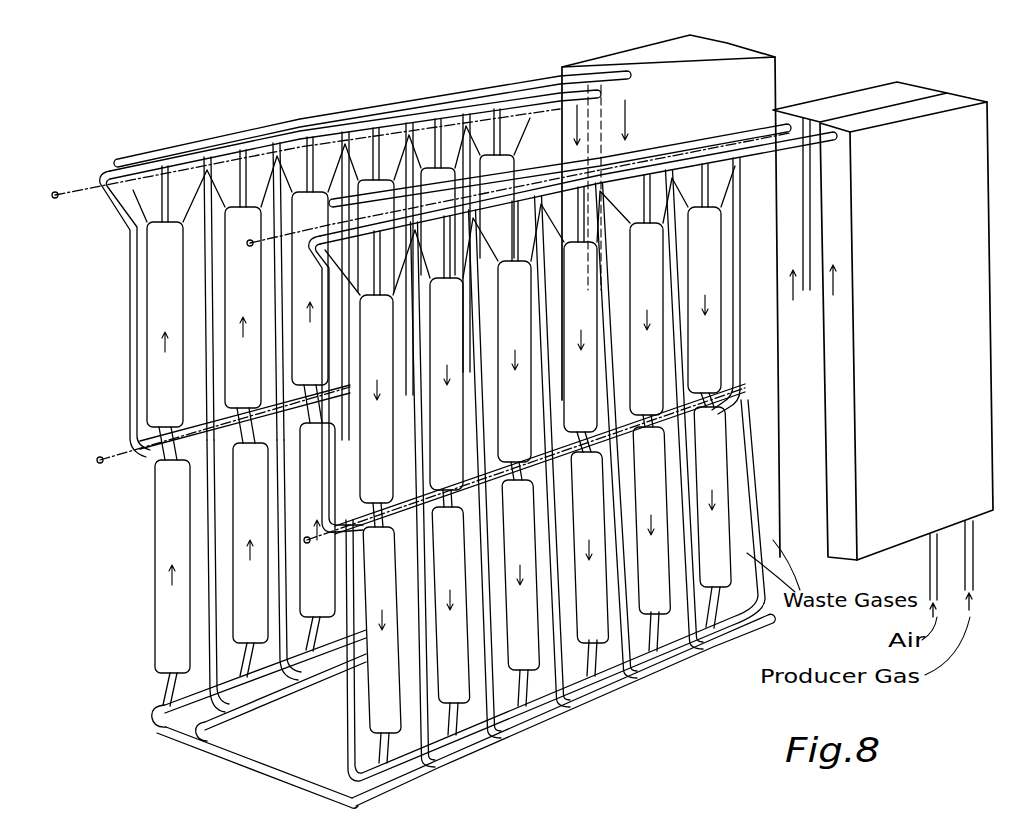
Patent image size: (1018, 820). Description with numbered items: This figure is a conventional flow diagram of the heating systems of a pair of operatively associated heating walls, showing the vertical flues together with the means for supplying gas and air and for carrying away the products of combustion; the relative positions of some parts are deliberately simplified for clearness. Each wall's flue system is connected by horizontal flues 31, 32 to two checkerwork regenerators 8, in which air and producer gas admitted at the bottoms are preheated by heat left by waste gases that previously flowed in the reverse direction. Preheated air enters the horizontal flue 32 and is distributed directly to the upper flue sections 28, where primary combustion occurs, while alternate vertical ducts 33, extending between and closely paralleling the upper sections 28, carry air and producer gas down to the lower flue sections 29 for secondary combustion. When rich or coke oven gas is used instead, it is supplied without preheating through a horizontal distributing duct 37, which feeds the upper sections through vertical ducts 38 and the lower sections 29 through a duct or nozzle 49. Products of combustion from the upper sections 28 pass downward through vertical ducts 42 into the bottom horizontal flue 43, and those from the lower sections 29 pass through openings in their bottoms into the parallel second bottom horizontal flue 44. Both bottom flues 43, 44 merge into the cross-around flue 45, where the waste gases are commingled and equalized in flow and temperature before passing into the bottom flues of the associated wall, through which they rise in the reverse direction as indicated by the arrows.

The regenerator 8 is at (707, 43).
The upper flue section 28 is at (158, 275).
The lower flue section 29 is at (163, 510).
The horizontal flue 31 is at (217, 147).
The horizontal flue 32 is at (291, 150).
The duct 33 is at (135, 325).
The horizontal distributing duct 37 is at (58, 192).
The vertical duct 38 is at (163, 203).
The vertical duct 42 is at (213, 583).
The bottom horizontal flue 43 is at (357, 662).
The second bottom horizontal flue 44 is at (165, 707).
The cross-around flue 45 is at (213, 750).
The duct or nozzle 49 is at (452, 346).